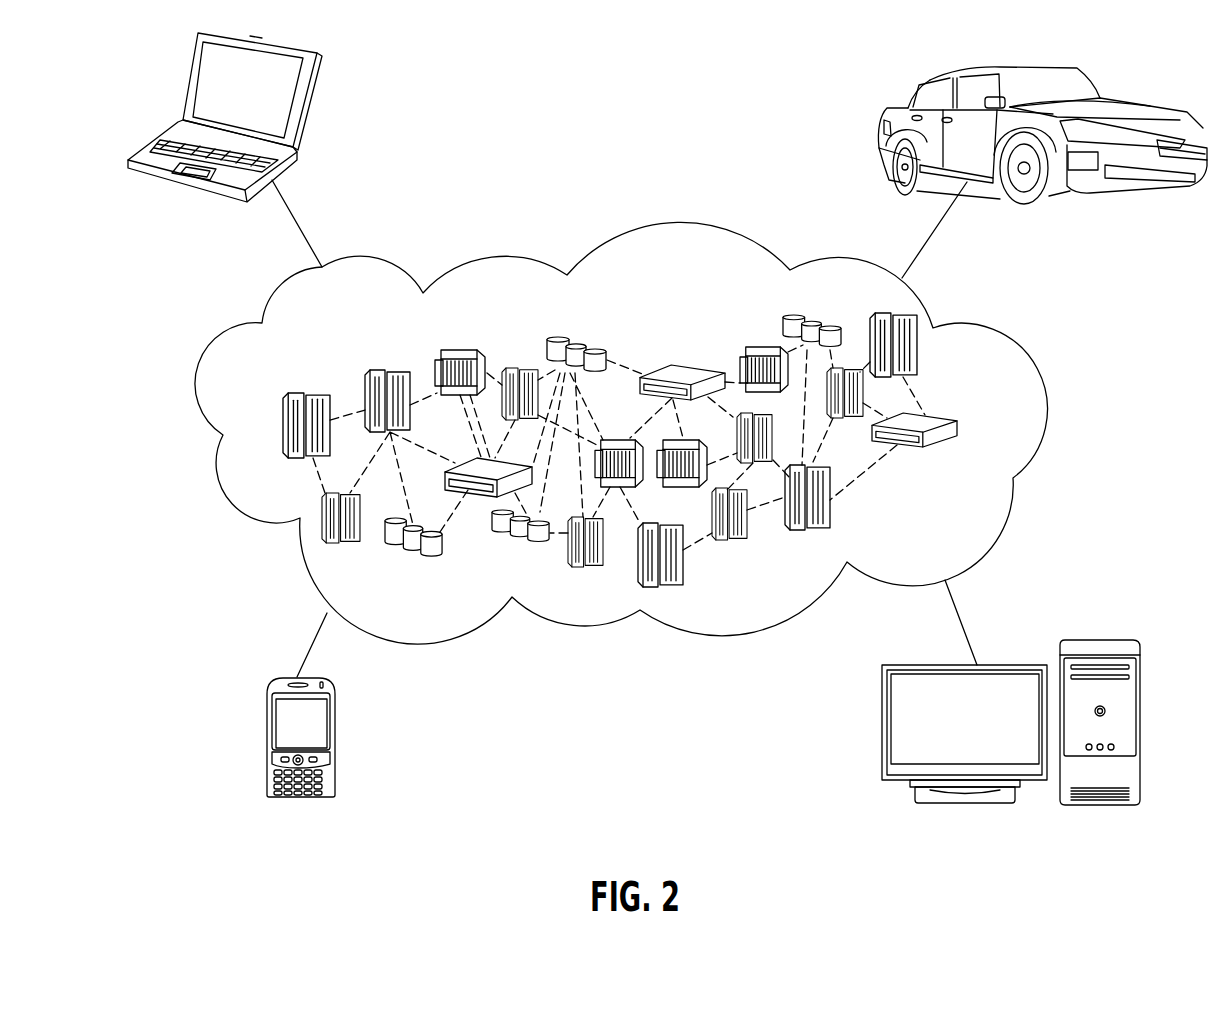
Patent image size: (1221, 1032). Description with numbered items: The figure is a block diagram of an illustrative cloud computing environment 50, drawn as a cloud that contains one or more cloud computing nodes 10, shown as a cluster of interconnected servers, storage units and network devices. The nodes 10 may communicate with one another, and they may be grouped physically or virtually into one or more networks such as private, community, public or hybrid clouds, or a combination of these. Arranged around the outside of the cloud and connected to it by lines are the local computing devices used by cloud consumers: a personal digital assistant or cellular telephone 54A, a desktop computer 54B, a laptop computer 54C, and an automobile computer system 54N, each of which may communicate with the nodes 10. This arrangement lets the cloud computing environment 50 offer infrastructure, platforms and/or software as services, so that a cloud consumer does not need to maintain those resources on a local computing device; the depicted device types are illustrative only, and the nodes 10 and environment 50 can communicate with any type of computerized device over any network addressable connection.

The cloud computing node 10 is at (1003, 428).
The cloud computing environment 50 is at (1023, 340).
The personal digital assistant or cellular telephone 54A is at (266, 740).
The desktop computer 54B is at (1105, 640).
The laptop computer 54C is at (307, 107).
The automobile computer system 54N is at (893, 115).